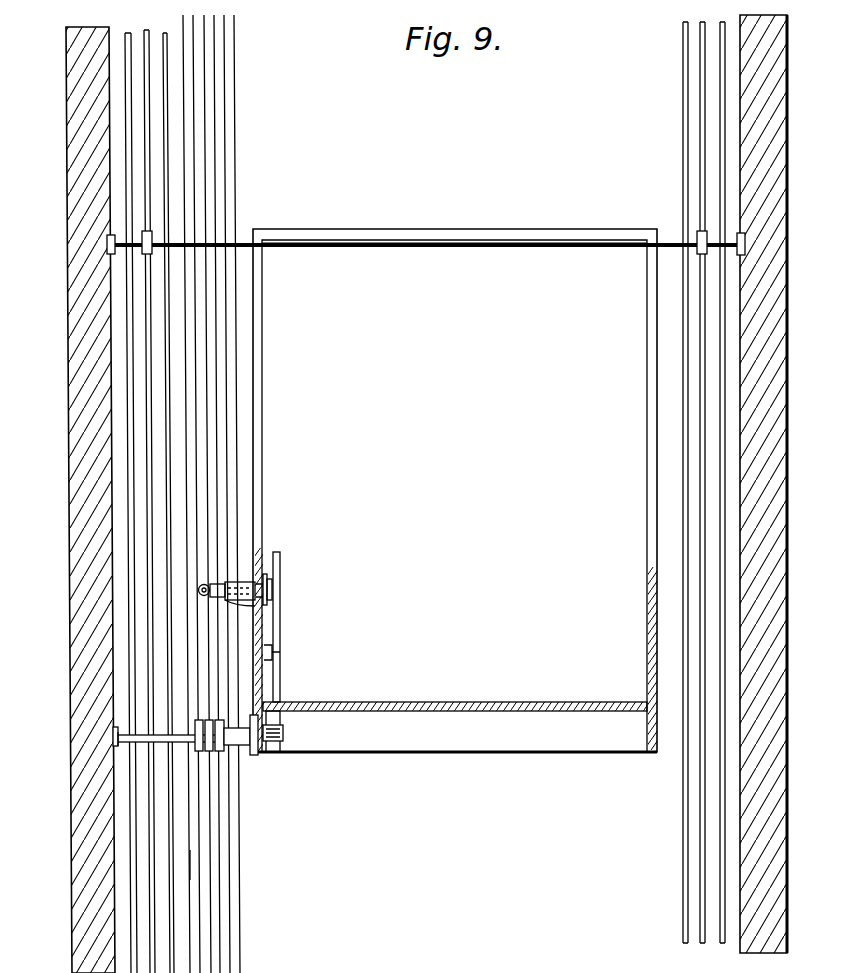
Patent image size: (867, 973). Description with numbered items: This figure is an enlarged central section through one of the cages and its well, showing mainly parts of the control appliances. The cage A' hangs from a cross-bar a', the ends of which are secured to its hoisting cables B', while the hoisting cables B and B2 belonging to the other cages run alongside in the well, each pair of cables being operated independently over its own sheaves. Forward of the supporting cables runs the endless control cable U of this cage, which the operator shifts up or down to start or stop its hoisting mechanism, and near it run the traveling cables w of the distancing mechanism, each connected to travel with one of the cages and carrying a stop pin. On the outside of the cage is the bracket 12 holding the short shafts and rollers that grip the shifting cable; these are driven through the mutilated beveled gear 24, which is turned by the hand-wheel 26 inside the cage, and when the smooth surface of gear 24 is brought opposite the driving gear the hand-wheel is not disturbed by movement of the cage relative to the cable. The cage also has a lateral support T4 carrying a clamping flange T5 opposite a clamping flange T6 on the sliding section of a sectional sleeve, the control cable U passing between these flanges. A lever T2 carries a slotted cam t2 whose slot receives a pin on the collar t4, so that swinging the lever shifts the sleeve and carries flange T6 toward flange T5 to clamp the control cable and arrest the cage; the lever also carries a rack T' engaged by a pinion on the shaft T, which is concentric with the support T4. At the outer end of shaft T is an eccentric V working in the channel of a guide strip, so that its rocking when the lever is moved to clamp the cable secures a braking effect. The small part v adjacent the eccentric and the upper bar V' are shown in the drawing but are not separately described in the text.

The hoisting cables B is at (424, 497).
The hoisting cables B' is at (427, 497).
The hoisting cables B2 is at (166, 177).
The upper cross bar V' is at (423, 247).
The eccentric V is at (147, 728).
The bracket v is at (120, 740).
The shaft T is at (72, 500).
The lever T2 is at (281, 645).
The lateral support T4 is at (275, 657).
The clamping flange T5 is at (208, 752).
The clamping flange T6 is at (218, 752).
The rack T' is at (293, 731).
The slotted cam t2 is at (268, 712).
The collar t4 is at (271, 752).
The traveling cage A' is at (455, 490).
The cross-bar a' is at (454, 263).
The bracket 12 is at (242, 584).
The hand-wheel 26 is at (273, 588).
The mutilated beveled gear 24 is at (218, 600).
The control cable U is at (222, 878).
The traveling cable w is at (203, 912).